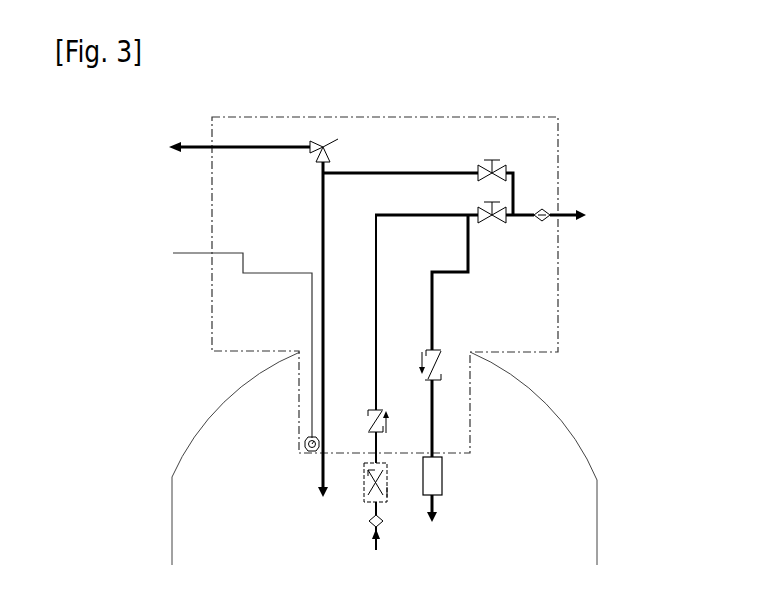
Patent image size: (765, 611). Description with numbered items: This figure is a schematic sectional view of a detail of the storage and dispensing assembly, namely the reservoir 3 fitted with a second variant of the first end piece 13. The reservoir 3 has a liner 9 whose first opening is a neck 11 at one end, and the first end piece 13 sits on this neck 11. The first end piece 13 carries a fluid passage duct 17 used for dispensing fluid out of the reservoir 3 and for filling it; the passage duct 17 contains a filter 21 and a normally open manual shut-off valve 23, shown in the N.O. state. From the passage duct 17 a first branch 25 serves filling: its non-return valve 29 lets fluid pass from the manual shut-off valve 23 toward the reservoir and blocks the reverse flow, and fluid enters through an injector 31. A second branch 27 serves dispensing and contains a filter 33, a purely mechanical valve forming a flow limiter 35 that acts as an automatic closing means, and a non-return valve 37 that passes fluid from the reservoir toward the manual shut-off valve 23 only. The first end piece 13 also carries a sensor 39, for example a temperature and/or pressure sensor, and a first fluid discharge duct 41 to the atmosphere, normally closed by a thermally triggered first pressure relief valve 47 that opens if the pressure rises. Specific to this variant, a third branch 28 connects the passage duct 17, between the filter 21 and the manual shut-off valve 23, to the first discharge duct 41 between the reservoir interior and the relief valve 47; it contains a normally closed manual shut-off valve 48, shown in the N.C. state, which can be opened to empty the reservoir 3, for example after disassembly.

The reservoir 3 is at (136, 355).
The liner 9 is at (172, 527).
The neck 11 is at (503, 365).
The first end piece 13 is at (558, 282).
The fluid passage duct 17 is at (555, 215).
The filter 21 is at (557, 218).
The manual shut-off valve 23 is at (500, 205).
The first branch 25 is at (432, 315).
The second branch 27 is at (410, 217).
The third branch 28 is at (400, 173).
The non-return valve 29 is at (440, 368).
The injector 31 is at (443, 472).
The filter 33 is at (383, 523).
The valve forming a flow limiter 35 is at (363, 487).
The non-return valve 37 is at (367, 420).
The sensor 39 is at (305, 445).
The first fluid discharge duct 41 is at (323, 250).
The first pressure relief valve 47 is at (313, 146).
The manual shut-off valve 48 is at (500, 160).